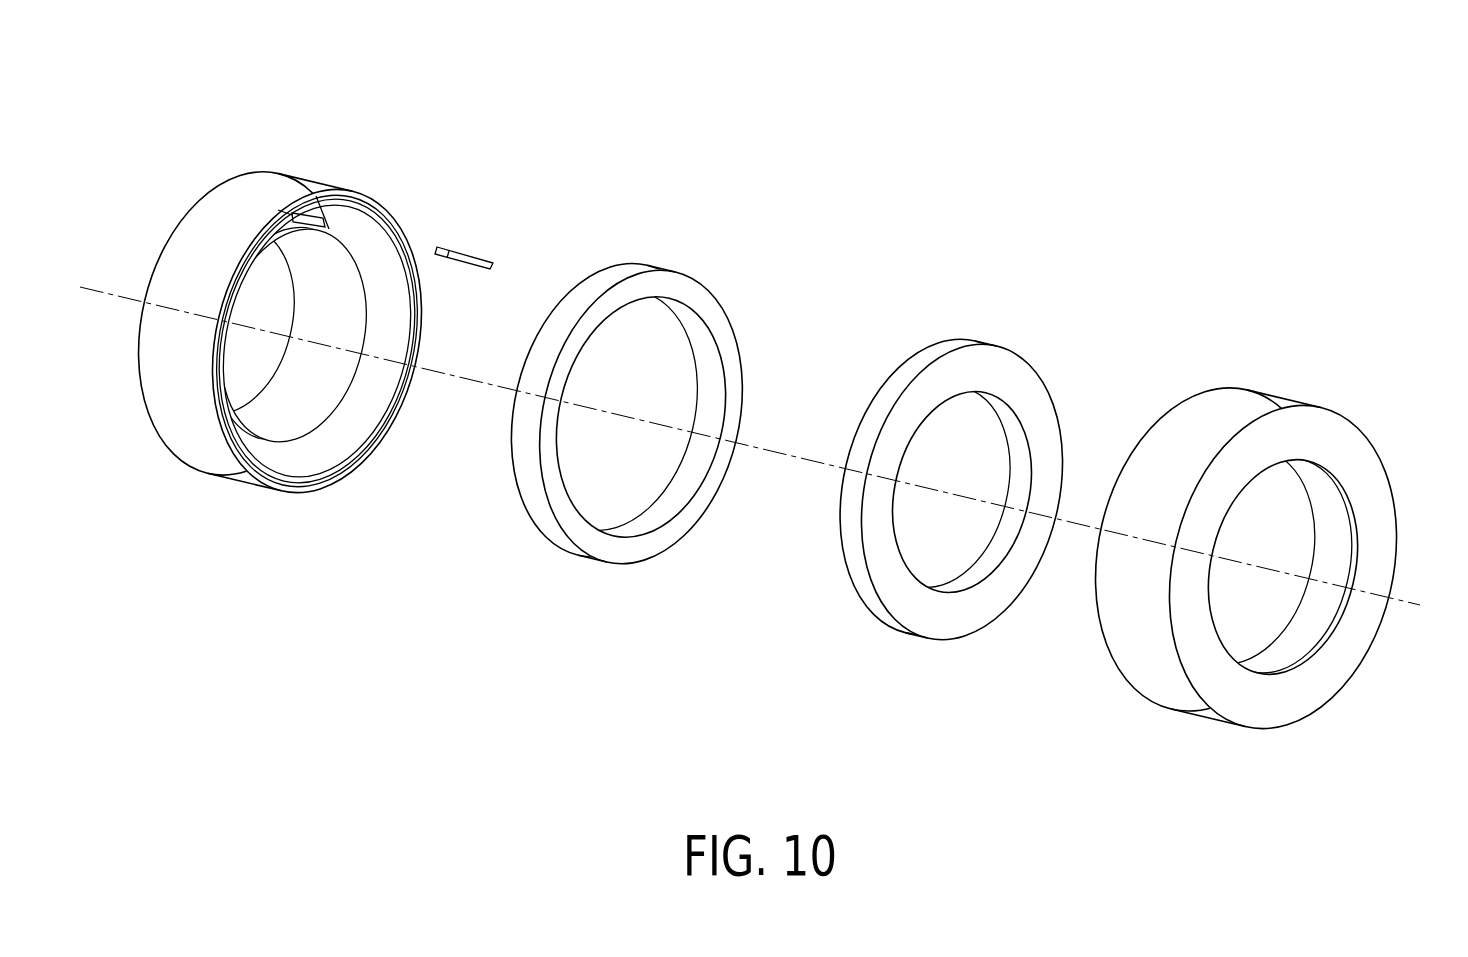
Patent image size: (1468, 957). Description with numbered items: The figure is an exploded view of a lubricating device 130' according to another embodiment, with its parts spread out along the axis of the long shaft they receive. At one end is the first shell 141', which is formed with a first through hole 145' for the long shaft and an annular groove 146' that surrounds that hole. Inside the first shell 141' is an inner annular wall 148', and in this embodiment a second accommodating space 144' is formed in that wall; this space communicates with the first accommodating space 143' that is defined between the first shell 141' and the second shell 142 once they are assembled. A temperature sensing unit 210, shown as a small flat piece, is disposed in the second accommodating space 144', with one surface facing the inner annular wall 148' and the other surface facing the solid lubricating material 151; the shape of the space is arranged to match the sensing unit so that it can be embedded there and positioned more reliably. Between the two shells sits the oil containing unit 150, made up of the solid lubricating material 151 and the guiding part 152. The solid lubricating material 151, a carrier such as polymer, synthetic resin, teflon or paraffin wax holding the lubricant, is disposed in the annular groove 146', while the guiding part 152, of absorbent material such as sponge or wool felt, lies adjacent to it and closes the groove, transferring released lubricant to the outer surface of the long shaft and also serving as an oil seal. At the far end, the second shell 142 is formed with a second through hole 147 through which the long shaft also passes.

The lubricating device 130' is at (766, 337).
The first shell 141' is at (280, 302).
The first accommodating space 143' is at (355, 341).
The second accommodating space 144' is at (357, 189).
The first through hole 145' is at (312, 357).
The annular groove 146' is at (286, 387).
The inner annular wall 148' is at (309, 321).
The temperature sensing unit 210 is at (477, 247).
The oil containing unit 150 is at (892, 232).
The solid lubricating material 151 is at (694, 295).
The guiding part 152 is at (935, 377).
The second shell 142 is at (1242, 407).
The second through hole 147 is at (1258, 609).